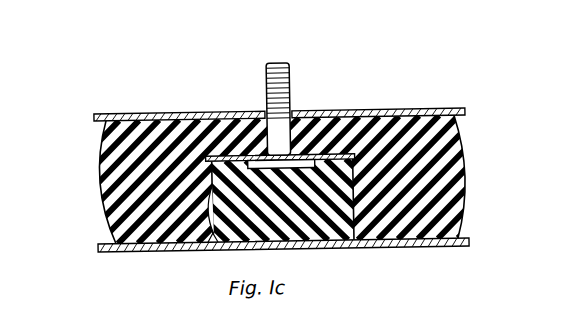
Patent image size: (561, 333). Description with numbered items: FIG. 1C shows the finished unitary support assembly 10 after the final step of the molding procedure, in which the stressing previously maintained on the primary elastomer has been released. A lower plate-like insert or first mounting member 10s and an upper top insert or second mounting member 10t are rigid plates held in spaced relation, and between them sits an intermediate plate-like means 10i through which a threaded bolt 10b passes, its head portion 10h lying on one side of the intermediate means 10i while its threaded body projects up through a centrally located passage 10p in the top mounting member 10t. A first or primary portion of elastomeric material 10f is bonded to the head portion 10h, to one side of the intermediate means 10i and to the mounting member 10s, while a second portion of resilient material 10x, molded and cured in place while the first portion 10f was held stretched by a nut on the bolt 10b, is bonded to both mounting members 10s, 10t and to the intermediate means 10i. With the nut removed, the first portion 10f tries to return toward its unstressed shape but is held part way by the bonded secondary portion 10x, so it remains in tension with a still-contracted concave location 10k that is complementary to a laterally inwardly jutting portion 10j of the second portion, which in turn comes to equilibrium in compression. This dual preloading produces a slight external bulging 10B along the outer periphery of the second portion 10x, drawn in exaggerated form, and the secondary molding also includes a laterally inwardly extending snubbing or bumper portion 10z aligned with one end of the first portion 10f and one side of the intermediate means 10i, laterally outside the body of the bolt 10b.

The unitary support assembly 10 is at (102, 144).
The external bulging 10B is at (100, 185).
The snubbing or bumper portion 10z is at (192, 133).
The second quantity or portion of resilient material 10x is at (452, 203).
The first or primary portion of elastomeric material 10f is at (333, 229).
The laterally inwardly jutting portion 10j is at (210, 182).
The concave location of the first portion 10k is at (211, 248).
The intermediate plate-like means 10i is at (350, 158).
The head portion of the bolt 10h is at (256, 161).
The top insert or second mounting member 10t is at (418, 114).
The plate-like insert or first mounting member 10s is at (413, 244).
The threaded bolt 10b is at (296, 116).
The centrally located passage 10p is at (261, 116).